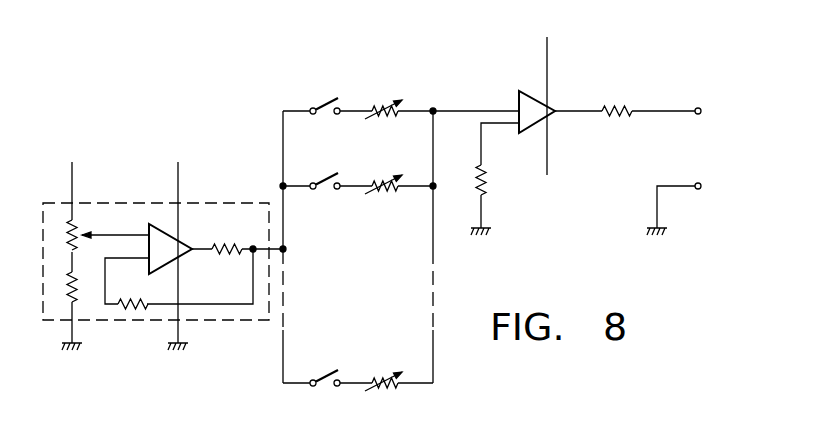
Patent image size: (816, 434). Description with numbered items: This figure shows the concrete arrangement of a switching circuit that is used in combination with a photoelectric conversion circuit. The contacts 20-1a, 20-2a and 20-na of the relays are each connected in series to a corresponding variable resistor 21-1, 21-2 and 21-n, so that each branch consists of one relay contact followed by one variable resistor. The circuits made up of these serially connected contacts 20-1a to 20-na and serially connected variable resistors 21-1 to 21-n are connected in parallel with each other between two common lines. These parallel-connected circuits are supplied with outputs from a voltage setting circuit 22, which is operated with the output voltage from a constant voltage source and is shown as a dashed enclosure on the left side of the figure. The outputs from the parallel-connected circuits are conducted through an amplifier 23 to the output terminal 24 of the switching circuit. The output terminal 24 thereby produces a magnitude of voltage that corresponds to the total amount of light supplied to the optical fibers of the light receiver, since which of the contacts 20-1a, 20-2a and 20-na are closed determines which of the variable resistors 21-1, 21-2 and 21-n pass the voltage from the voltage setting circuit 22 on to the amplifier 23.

The contact 20-1a is at (322, 100).
The contact 20-2a is at (323, 190).
The contact 20-na is at (322, 378).
The variable resistor 21-1 is at (371, 105).
The variable resistor 21-2 is at (371, 181).
The variable resistor 21-n is at (375, 378).
The voltage setting circuit 22 is at (108, 320).
The amplifier 23 is at (532, 92).
The output terminal 24 is at (698, 107).